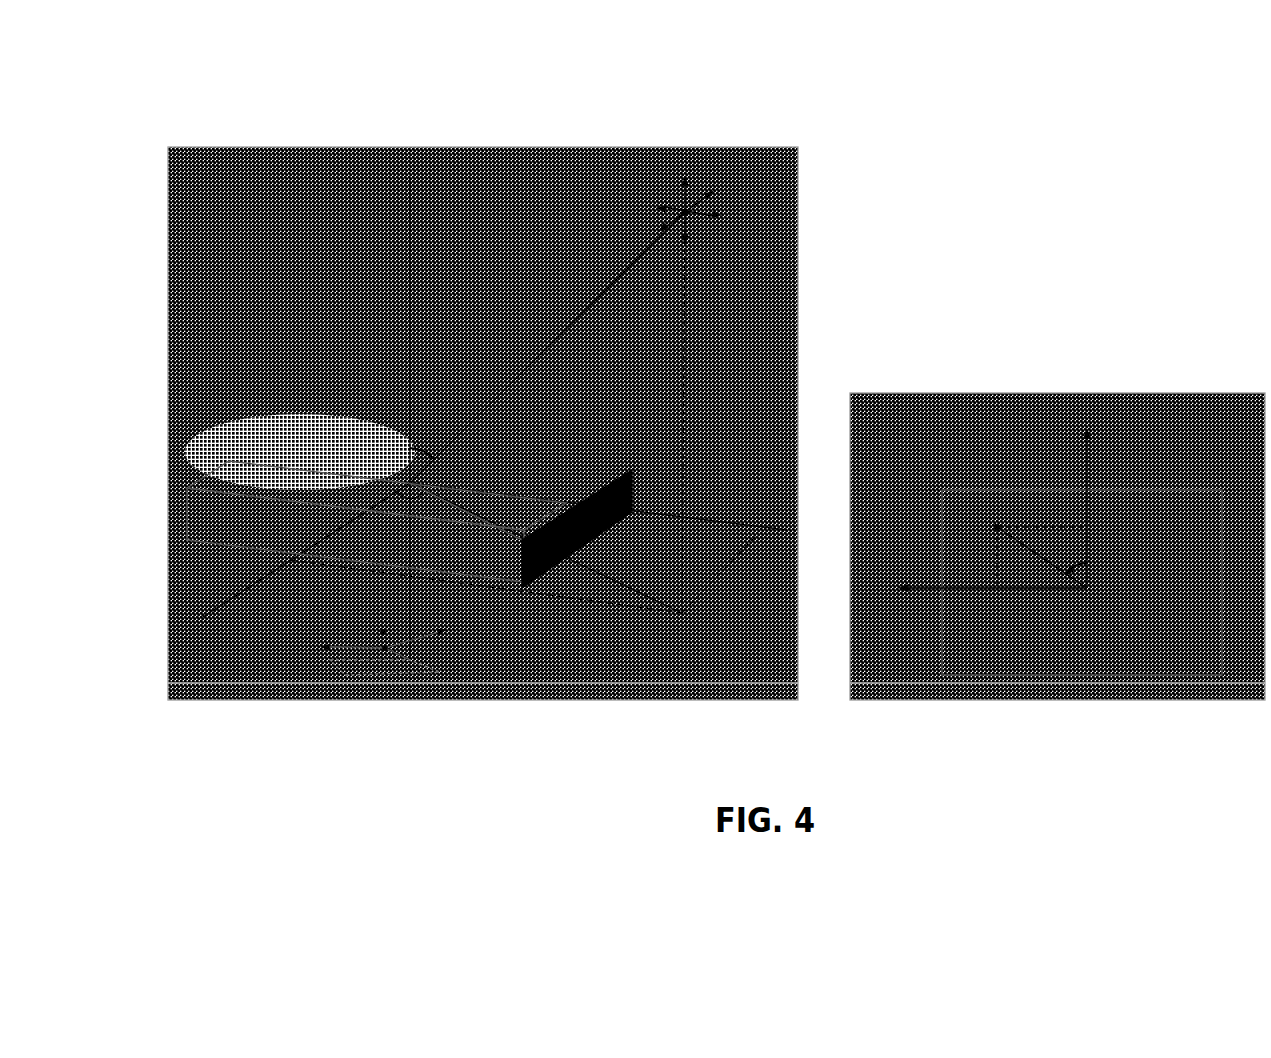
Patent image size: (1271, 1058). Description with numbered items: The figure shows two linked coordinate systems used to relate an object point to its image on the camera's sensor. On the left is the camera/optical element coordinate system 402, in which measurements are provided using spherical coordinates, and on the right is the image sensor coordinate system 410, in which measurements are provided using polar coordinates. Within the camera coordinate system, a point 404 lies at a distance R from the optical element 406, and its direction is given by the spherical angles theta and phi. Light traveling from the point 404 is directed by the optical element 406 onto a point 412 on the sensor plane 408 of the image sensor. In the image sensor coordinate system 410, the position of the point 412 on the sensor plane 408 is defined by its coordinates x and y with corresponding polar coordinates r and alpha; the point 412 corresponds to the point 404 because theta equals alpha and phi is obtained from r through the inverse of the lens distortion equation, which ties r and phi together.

The camera/optical element coordinate system 402 is at (774, 172).
The point 404 is at (683, 195).
The optical element 406 is at (345, 458).
The sensor plane 408 is at (467, 660).
The image sensor coordinate system 410 is at (1212, 422).
The point on the sensor plane 412 is at (983, 513).